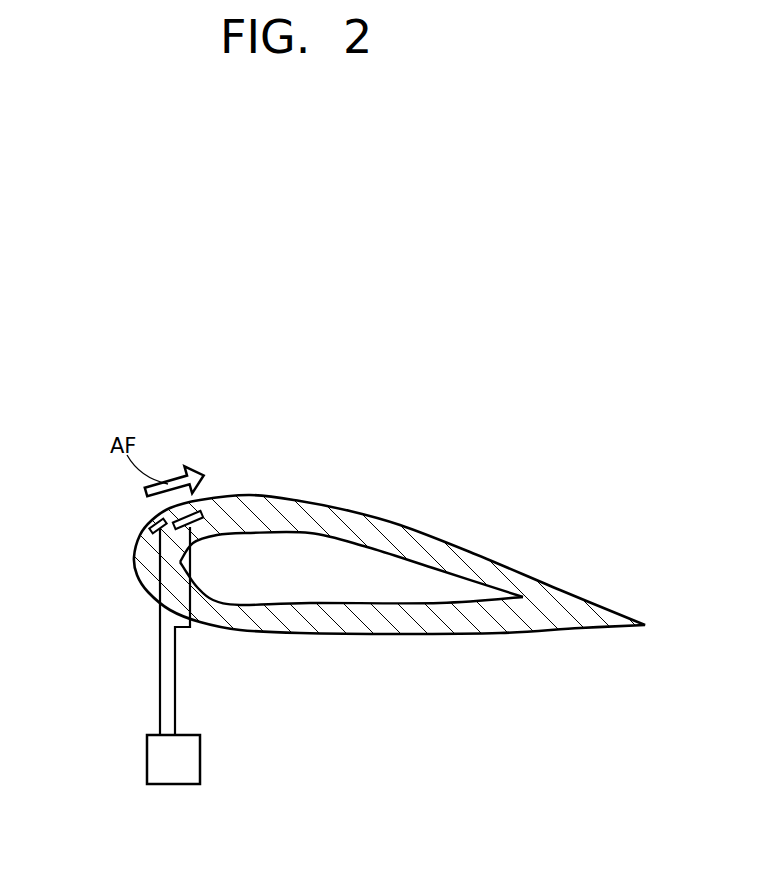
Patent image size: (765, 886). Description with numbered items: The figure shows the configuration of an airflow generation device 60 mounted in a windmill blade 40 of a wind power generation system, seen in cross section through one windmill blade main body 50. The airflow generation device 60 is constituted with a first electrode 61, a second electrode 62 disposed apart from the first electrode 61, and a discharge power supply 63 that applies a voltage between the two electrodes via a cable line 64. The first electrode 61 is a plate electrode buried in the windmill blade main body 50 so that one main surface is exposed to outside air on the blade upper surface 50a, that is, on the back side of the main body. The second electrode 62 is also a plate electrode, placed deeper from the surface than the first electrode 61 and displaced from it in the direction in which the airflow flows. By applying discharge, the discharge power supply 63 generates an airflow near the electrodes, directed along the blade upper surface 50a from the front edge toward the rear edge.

The windmill blade 40 is at (352, 556).
The windmill blade main body 50 is at (477, 622).
The blade upper surface 50a is at (478, 544).
The airflow generation device 60 is at (122, 630).
The first electrode 61 is at (155, 530).
The second electrode 62 is at (143, 507).
The discharge power supply 63 is at (163, 761).
The cable line 64 is at (160, 692).